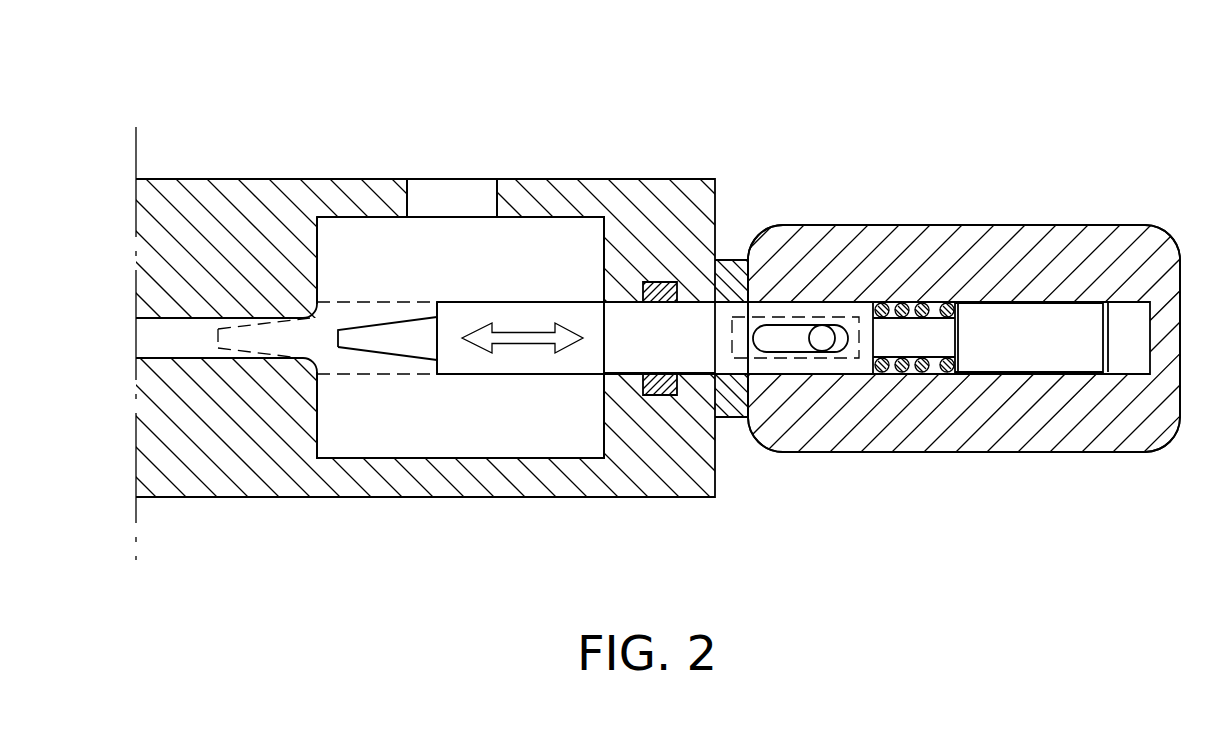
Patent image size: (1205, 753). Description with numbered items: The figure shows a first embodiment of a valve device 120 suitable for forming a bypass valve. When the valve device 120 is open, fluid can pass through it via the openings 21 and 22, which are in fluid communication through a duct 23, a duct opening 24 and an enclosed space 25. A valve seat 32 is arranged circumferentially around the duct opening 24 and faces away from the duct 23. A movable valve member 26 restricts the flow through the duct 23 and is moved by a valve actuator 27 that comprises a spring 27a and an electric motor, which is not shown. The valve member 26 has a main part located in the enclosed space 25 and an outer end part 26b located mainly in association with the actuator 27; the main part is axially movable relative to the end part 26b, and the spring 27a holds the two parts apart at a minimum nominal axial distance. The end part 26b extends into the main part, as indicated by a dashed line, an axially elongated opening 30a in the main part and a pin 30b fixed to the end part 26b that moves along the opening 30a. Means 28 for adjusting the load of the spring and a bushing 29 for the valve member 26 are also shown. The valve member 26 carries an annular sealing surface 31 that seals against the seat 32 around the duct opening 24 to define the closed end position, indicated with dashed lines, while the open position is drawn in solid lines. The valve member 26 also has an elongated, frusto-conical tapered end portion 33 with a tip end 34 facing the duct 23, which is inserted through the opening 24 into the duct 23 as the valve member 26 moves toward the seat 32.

The opening 21 is at (458, 203).
The opening 22 is at (136, 340).
The duct 23 is at (170, 338).
The duct opening 24 is at (316, 330).
The enclosed space 25 is at (378, 262).
The valve member 26 is at (594, 338).
The outer end part 26b is at (1013, 338).
The valve actuator 27 is at (1025, 135).
The spring 27a is at (900, 312).
The means for adjusting the load of the spring 28 is at (731, 390).
The bushing 29 is at (660, 395).
The axially elongated opening 30a is at (785, 338).
The pin 30b is at (820, 338).
The sealing surface 31 is at (423, 372).
The valve seat 32 is at (336, 366).
The elongated tapered end portion 33 is at (393, 338).
The tip end 34 is at (336, 338).
The valve device 120 is at (842, 512).